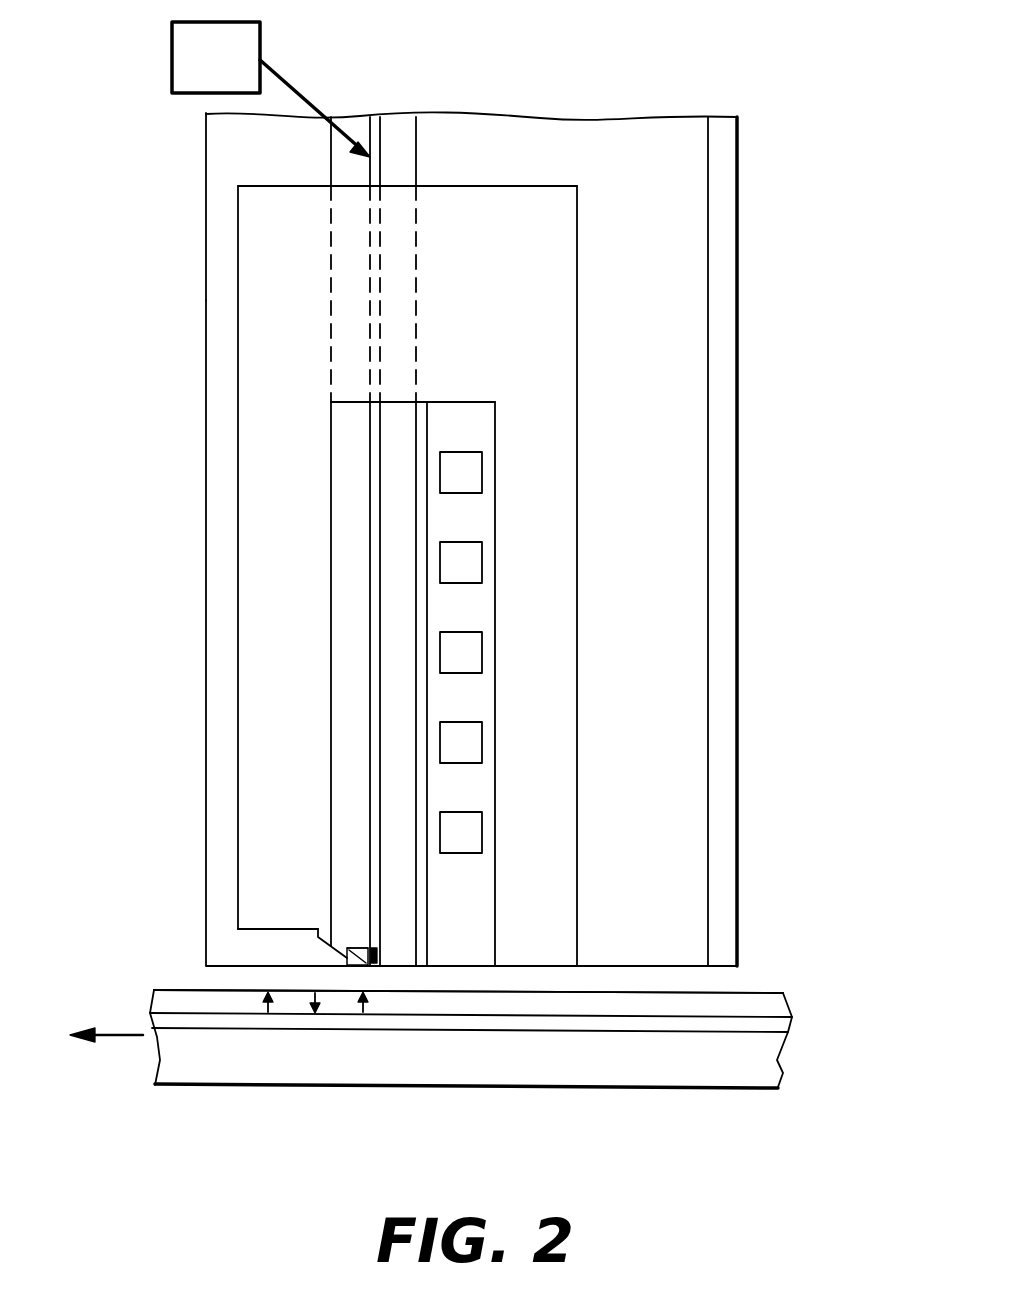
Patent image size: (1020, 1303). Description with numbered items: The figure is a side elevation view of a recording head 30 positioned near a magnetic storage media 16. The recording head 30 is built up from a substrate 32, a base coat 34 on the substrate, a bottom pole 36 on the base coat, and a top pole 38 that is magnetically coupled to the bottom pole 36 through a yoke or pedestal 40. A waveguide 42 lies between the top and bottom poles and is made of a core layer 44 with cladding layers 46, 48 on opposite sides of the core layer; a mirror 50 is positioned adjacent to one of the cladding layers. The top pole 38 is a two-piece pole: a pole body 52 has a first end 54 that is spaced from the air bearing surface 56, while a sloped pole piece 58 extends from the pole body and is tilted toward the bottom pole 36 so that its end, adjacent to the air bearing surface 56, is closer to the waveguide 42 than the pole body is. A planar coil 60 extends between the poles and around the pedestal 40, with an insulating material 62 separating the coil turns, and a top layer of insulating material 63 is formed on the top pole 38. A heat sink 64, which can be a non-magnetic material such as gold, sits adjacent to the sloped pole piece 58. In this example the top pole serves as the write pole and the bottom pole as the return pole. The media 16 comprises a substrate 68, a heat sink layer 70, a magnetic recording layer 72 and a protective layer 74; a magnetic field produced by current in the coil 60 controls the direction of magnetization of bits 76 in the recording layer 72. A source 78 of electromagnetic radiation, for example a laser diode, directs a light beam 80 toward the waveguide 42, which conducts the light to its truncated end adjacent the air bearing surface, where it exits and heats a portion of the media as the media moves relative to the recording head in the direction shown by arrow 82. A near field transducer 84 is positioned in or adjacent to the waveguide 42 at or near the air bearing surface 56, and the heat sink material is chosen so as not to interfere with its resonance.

The storage media 16 is at (787, 982).
The recording head 30 is at (150, 208).
The substrate 32 is at (725, 133).
The base coat 34 is at (650, 143).
The bottom pole 36 is at (563, 604).
The top pole 38 is at (245, 655).
The yoke or pedestal 40 is at (490, 202).
The waveguide 42 is at (417, 101).
The core layer 44 is at (375, 507).
The cladding layer 46 is at (392, 445).
The cladding layer 48 is at (347, 577).
The mirror 50 is at (421, 405).
The pole body 52 is at (245, 793).
The first end 54 is at (248, 947).
The air bearing surface 56 is at (467, 967).
The sloped pole piece 58 is at (345, 950).
The planar coil 60 is at (472, 658).
The insulating material 62 is at (493, 910).
The top layer of insulating material 63 is at (222, 300).
The heat sink 64 is at (358, 947).
The substrate 68 is at (712, 1067).
The heat sink layer 70 is at (778, 1023).
The magnetic recording layer 72 is at (767, 1008).
The protective layer 74 is at (758, 993).
The bits 76 is at (263, 1011).
The source of electromagnetic radiation 78 is at (172, 58).
The light beam 80 is at (297, 92).
The arrow 82 is at (113, 1036).
The near field transducer 84 is at (382, 957).